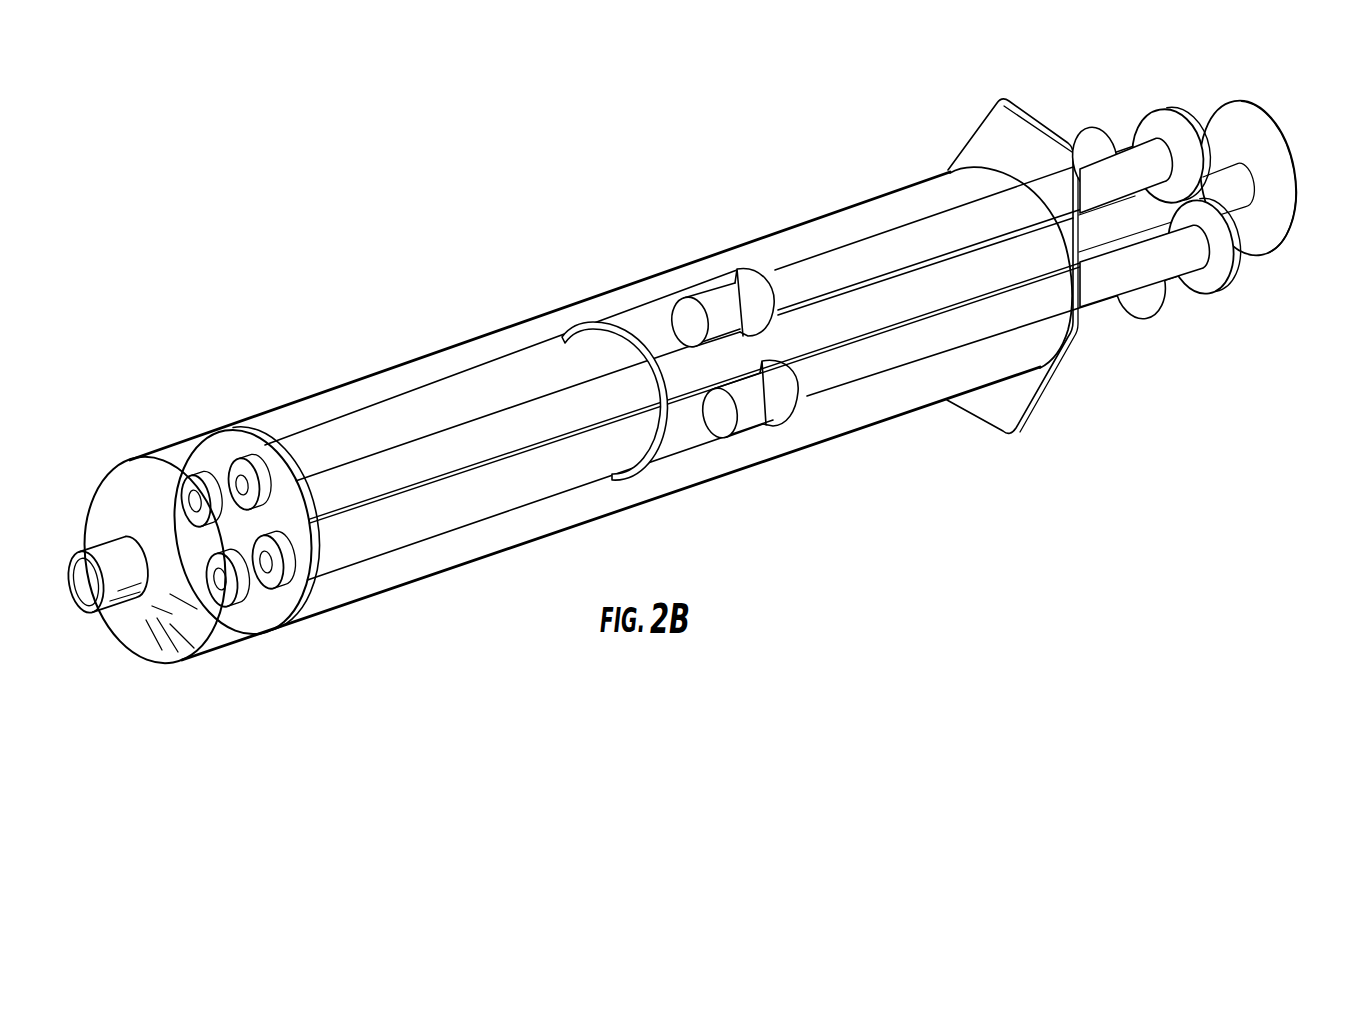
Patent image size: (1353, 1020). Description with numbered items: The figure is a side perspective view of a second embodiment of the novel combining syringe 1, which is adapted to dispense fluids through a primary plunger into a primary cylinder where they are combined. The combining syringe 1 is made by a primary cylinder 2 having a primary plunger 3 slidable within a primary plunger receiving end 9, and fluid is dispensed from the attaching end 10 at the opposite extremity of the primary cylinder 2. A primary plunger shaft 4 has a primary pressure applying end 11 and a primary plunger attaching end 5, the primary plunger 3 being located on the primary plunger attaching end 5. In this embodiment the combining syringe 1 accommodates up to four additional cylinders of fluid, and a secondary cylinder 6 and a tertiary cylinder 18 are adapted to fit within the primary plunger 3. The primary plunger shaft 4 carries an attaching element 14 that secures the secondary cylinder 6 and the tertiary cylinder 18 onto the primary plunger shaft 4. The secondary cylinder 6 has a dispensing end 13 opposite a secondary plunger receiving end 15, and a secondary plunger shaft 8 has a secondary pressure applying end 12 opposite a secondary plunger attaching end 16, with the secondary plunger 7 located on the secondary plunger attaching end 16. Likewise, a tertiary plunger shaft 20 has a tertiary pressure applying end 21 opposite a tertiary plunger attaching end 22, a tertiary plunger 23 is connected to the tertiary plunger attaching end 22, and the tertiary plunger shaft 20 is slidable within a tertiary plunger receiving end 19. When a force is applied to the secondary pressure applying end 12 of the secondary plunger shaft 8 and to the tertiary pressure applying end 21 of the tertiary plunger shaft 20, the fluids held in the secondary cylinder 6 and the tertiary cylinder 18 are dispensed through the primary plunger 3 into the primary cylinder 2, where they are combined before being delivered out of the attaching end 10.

The combining syringe 1 is at (175, 400).
The primary cylinder 2 is at (456, 347).
The primary plunger 3 is at (250, 600).
The primary plunger shaft 4 is at (858, 307).
The primary plunger attaching end 5 is at (318, 508).
The secondary cylinder 6 is at (433, 510).
The secondary plunger 7 is at (718, 407).
The secondary plunger shaft 8 is at (930, 340).
The primary plunger receiving end 9 is at (1114, 158).
The attaching end 10 is at (117, 513).
The primary pressure applying end 11 is at (1303, 160).
The secondary pressure applying end 12 is at (1236, 235).
The dispensing end 13 is at (236, 484).
The attaching element 14 is at (637, 352).
The secondary plunger receiving end 15 is at (798, 420).
The secondary plunger attaching end 16 is at (755, 400).
The tertiary cylinder 18 is at (497, 392).
The tertiary plunger receiving end 19 is at (740, 272).
The tertiary plunger shaft 20 is at (890, 248).
The tertiary pressure applying end 21 is at (1185, 110).
The tertiary plunger attaching end 22 is at (716, 306).
The tertiary plunger 23 is at (682, 313).